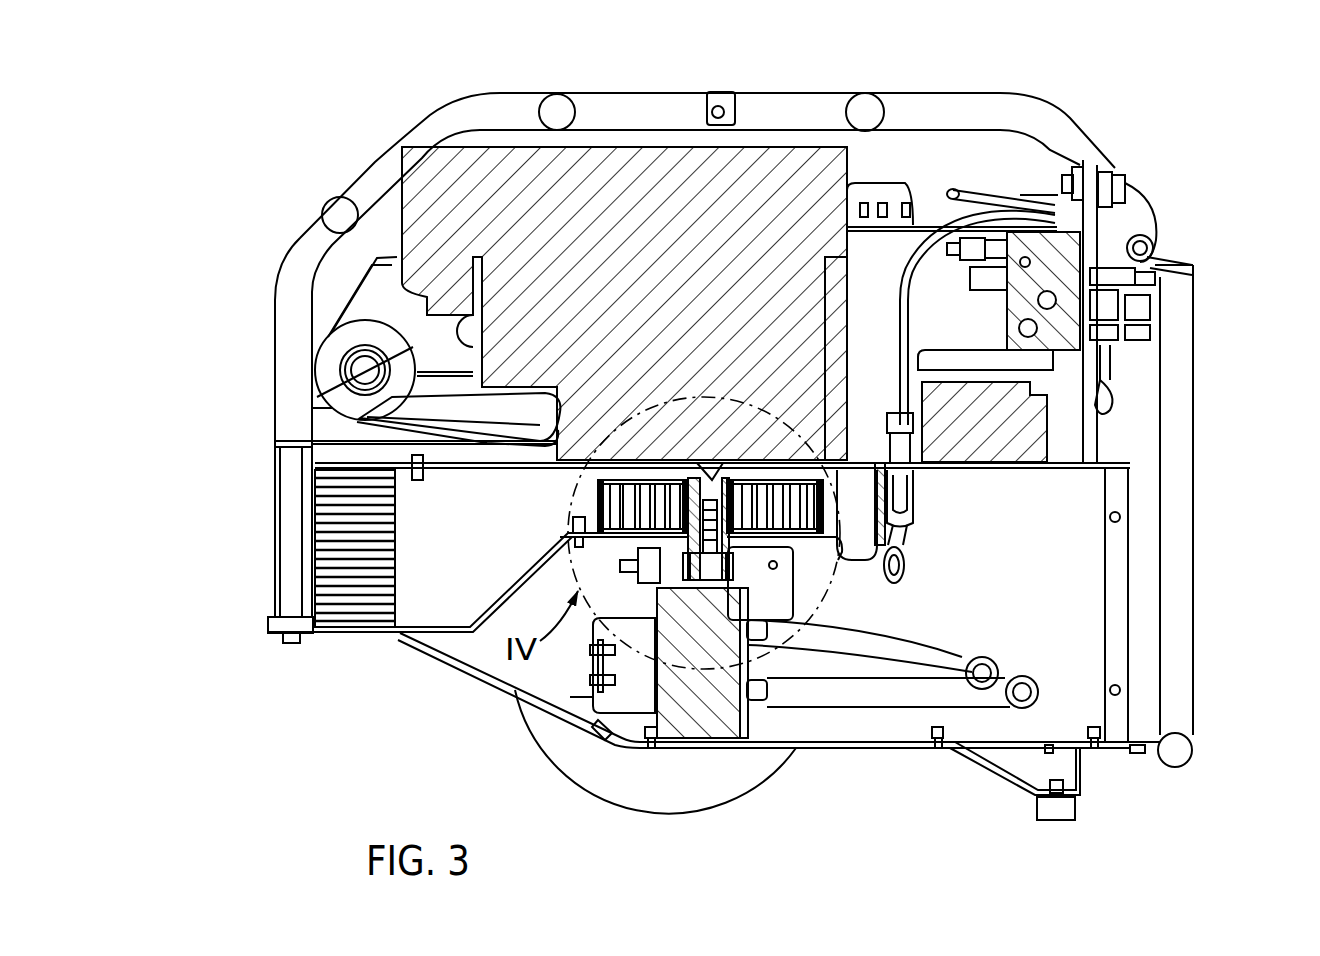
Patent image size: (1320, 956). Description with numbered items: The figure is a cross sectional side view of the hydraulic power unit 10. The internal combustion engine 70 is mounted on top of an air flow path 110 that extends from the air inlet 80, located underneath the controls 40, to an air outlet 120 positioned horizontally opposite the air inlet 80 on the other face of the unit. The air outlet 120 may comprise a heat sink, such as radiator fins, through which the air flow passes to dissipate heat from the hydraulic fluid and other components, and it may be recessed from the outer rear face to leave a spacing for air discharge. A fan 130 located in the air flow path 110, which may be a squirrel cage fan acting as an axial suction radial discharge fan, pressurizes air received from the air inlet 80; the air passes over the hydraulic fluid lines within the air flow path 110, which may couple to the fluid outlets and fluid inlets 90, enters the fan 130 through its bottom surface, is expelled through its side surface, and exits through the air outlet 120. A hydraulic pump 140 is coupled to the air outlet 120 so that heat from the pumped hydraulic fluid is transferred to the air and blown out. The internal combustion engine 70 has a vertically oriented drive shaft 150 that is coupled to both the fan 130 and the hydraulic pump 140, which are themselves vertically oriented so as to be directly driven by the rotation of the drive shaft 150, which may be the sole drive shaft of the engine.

The hydraulic power unit 10 is at (1191, 123).
The controls 40 is at (1170, 297).
The internal combustion engine 70 is at (580, 165).
The air inlet 80 is at (1132, 566).
The fluid outlets and fluid inlets 90 is at (1243, 492).
The air flow path 110 is at (1230, 653).
The air outlet 120 is at (330, 512).
The fan 130 is at (622, 533).
The hydraulic pump 140 is at (720, 720).
The vertically oriented drive shaft 150 is at (620, 472).